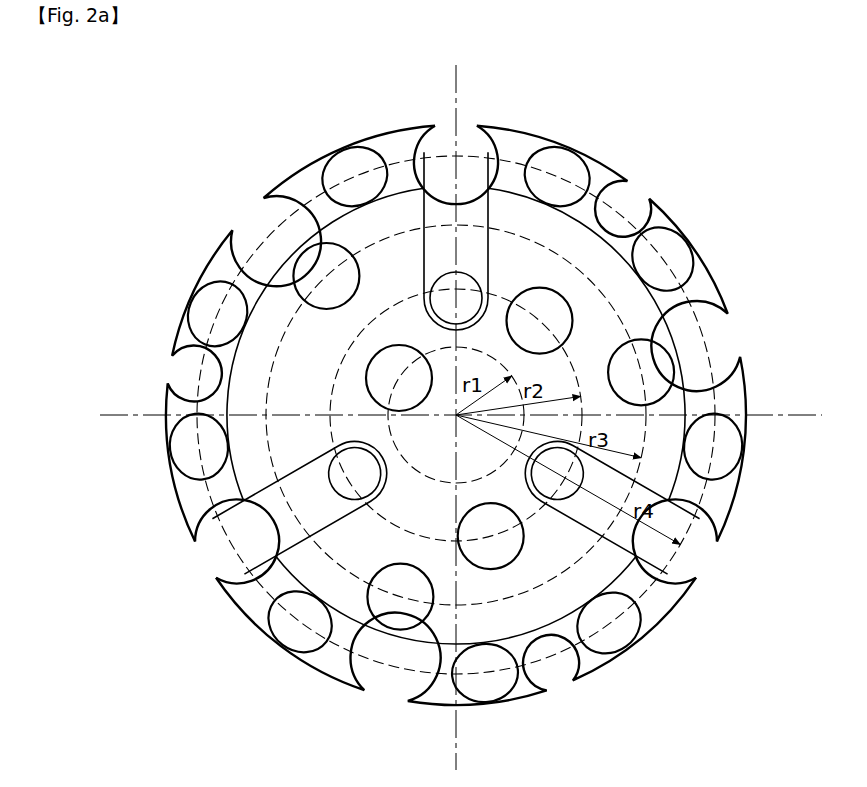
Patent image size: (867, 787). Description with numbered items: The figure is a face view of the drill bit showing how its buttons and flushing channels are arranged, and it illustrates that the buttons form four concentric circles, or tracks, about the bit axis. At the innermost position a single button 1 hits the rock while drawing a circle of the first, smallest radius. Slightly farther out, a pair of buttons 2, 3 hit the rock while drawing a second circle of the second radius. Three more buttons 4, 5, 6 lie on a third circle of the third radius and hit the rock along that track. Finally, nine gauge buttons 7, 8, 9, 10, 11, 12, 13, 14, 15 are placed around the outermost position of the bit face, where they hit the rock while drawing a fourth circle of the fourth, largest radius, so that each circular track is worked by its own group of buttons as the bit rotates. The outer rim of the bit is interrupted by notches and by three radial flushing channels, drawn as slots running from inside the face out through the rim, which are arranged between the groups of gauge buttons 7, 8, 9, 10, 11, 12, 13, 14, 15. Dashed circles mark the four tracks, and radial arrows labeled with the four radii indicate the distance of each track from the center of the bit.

The button 1 is at (399, 378).
The button 2 is at (491, 536).
The button 3 is at (540, 321).
The button 4 is at (326, 276).
The button 5 is at (400, 597).
The button 6 is at (641, 372).
The gauge button 7 is at (663, 259).
The gauge button 8 is at (556, 176).
The gauge button 9 is at (354, 176).
The gauge button 10 is at (217, 313).
The gauge button 11 is at (199, 446).
The gauge button 12 is at (300, 622).
The gauge button 13 is at (485, 673).
The gauge button 14 is at (608, 623).
The gauge button 15 is at (713, 446).